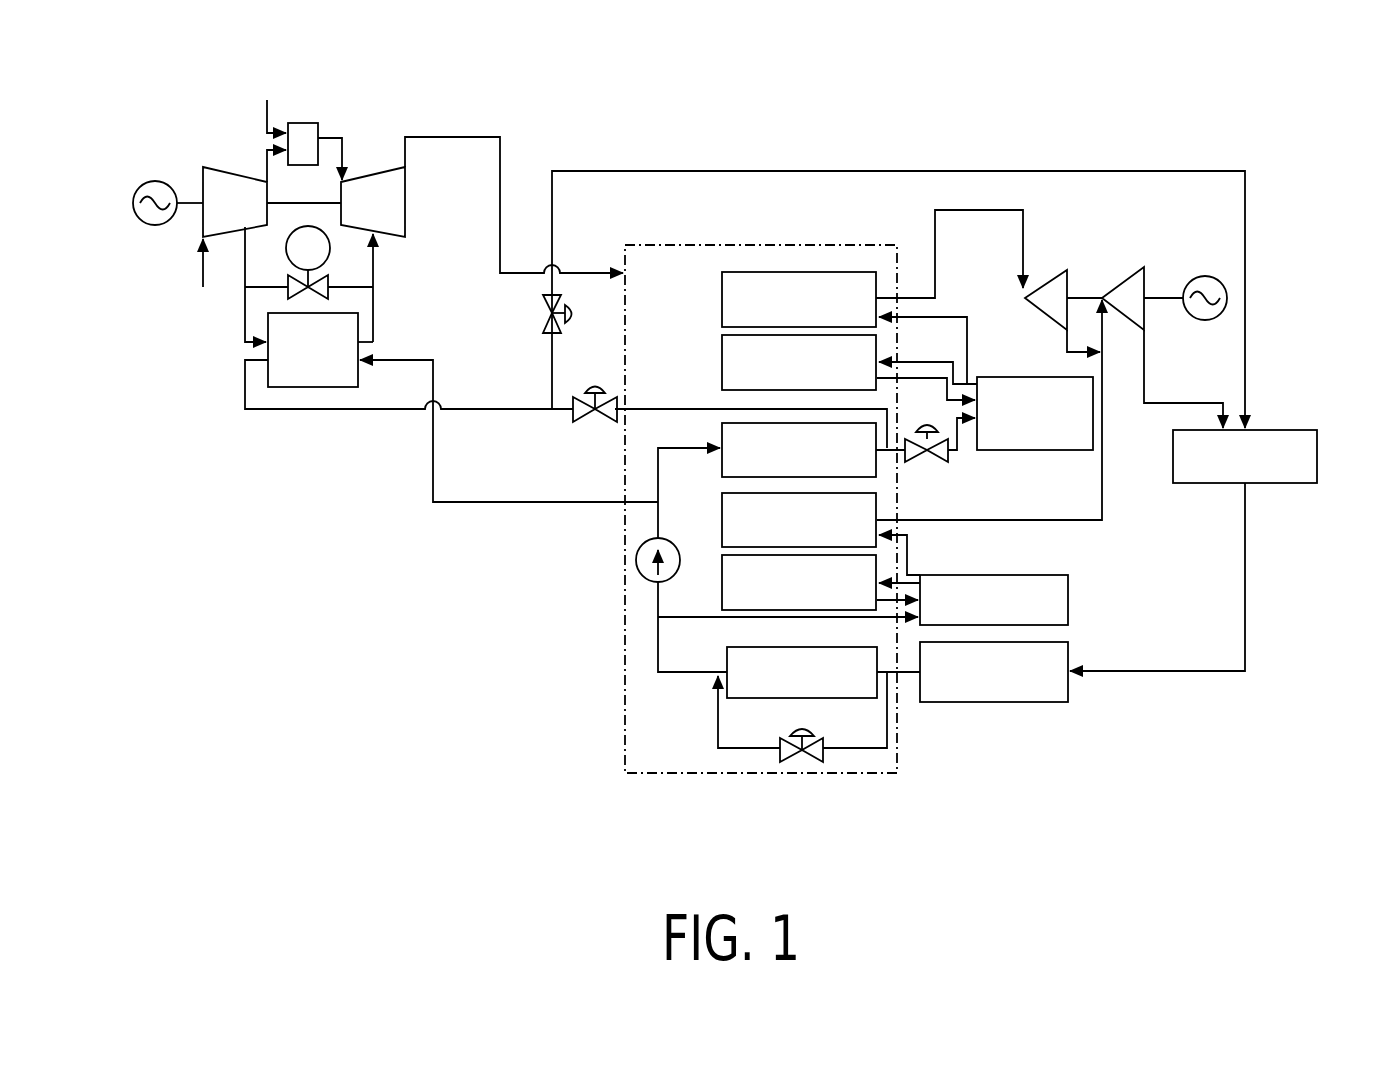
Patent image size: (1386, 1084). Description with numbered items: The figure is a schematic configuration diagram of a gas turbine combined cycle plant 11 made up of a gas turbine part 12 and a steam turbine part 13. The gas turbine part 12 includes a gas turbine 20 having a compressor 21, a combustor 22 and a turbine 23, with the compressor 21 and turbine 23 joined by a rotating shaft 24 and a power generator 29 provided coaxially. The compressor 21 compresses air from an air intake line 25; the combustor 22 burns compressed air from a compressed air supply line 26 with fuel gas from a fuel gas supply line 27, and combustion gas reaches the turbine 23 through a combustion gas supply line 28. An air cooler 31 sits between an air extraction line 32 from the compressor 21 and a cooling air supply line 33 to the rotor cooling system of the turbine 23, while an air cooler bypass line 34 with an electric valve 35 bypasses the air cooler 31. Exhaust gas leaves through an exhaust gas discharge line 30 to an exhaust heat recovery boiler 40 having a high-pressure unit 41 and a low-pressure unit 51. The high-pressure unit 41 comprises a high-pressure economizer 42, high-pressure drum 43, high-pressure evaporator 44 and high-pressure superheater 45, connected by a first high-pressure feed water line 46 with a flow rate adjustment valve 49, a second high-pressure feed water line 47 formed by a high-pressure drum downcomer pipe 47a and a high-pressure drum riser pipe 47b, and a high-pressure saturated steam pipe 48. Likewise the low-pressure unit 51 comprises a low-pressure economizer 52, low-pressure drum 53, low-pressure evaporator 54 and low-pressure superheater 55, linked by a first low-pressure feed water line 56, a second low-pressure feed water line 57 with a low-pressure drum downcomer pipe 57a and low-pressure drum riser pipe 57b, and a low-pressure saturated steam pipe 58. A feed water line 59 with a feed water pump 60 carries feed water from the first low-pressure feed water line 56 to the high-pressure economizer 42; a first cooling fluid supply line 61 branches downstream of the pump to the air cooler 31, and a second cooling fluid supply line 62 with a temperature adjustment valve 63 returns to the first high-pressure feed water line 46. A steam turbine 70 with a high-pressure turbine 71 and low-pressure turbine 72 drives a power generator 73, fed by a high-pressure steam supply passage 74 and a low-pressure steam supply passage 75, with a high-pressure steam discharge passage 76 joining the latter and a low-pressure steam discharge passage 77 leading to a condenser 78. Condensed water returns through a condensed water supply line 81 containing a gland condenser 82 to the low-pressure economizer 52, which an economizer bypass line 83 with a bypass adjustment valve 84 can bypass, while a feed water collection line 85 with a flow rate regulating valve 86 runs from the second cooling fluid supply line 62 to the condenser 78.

The gas turbine combined cycle plant 11 is at (893, 88).
The gas turbine part 12 is at (243, 443).
The steam turbine part 13 is at (1278, 525).
The gas turbine 20 is at (203, 96).
The compressor 21 is at (212, 168).
The combustor 22 is at (303, 123).
The turbine 23 is at (362, 175).
The rotating shaft 24 is at (282, 200).
The air intake line 25 is at (201, 272).
The compressed air supply line 26 is at (266, 166).
The fuel gas supply line 27 is at (265, 112).
The combustion gas supply line 28 is at (336, 136).
The power generator 29 is at (155, 181).
The exhaust gas discharge line 30 is at (448, 135).
The air cooler 31 is at (308, 390).
The air extraction line 32 is at (243, 275).
The cooling air supply line 33 is at (376, 272).
The air cooler bypass line 34 is at (357, 290).
The electric valve 35 is at (287, 250).
The exhaust heat recovery boiler 40 is at (905, 738).
The high-pressure unit 41 is at (644, 281).
The high-pressure economizer 42 is at (722, 438).
The high-pressure drum 43 is at (1063, 377).
The high-pressure evaporator 44 is at (722, 373).
The high-pressure superheater 45 is at (722, 285).
The first high-pressure feed water line 46 is at (960, 445).
The second high-pressure feed water line 47 is at (923, 322).
The high-pressure drum downcomer pipe 47a is at (942, 378).
The high-pressure drum riser pipe 47b is at (910, 360).
The high-pressure saturated steam pipe 48 is at (957, 320).
The flow rate adjustment valve 49 is at (927, 424).
The low-pressure unit 51 is at (690, 664).
The low-pressure economizer 52 is at (727, 656).
The low-pressure drum 53 is at (1010, 575).
The low-pressure evaporator 54 is at (722, 602).
The low-pressure superheater 55 is at (722, 509).
The first low-pressure feed water line 56 is at (790, 618).
The second low-pressure feed water line 57 is at (970, 538).
The low-pressure drum downcomer pipe 57a is at (887, 603).
The low-pressure drum riser pipe 57b is at (913, 573).
The low-pressure saturated steam pipe 58 is at (900, 532).
The feed water line 59 is at (657, 487).
The feed water pump 60 is at (636, 560).
The first cooling fluid supply line 61 is at (505, 501).
The second cooling fluid supply line 62 is at (505, 408).
The temperature adjustment valve 63 is at (596, 382).
The steam turbine 70 is at (1093, 245).
The high-pressure turbine 71 is at (1040, 286).
The low-pressure turbine 72 is at (1114, 288).
The power generator 73 is at (1200, 276).
The high-pressure steam supply passage 74 is at (980, 209).
The low-pressure steam supply passage 75 is at (1105, 500).
The high-pressure steam discharge passage 76 is at (1064, 343).
The low-pressure steam discharge passage 77 is at (1145, 380).
The condenser 78 is at (1173, 460).
The condensed water supply line 81 is at (1247, 627).
The gland condenser 82 is at (1068, 662).
The economizer bypass line 83 is at (833, 752).
The bypass adjustment valve 84 is at (795, 731).
The feed water collection line 85 is at (833, 170).
The flow rate regulating valve 86 is at (578, 312).